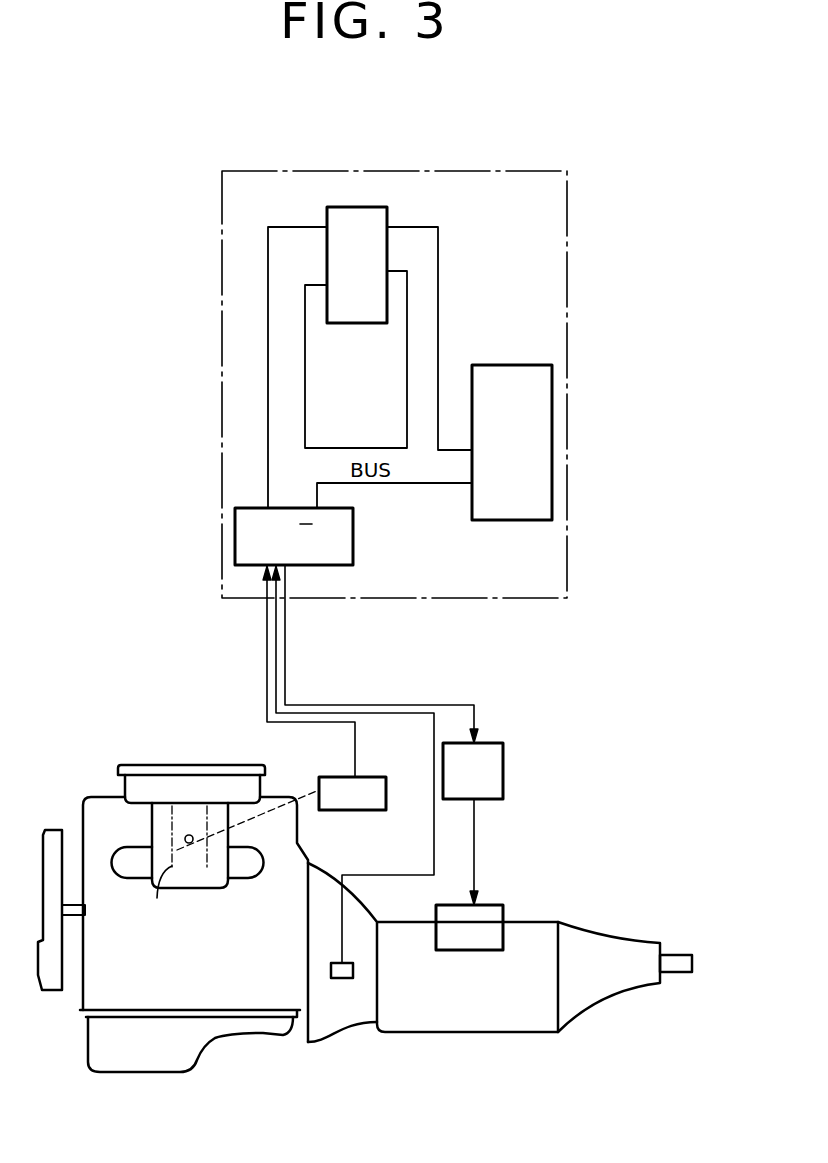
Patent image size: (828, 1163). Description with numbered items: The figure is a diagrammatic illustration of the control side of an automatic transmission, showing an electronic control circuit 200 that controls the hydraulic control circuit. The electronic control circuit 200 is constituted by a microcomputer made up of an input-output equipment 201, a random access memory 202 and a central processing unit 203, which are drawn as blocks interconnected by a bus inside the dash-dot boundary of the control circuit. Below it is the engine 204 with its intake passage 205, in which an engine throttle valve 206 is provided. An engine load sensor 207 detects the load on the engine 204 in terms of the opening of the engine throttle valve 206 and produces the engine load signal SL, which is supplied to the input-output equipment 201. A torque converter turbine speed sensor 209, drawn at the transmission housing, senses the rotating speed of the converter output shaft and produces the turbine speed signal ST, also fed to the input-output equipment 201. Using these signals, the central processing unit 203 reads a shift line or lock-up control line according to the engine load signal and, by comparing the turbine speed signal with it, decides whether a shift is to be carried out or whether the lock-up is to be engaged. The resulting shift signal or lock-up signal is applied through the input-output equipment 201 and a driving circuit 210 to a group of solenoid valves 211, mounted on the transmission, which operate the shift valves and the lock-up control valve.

The electronic control circuit 200 is at (414, 171).
The input-output equipment 201 is at (353, 531).
The random access memory 202 is at (388, 220).
The central processing unit 203 is at (508, 365).
The engine 204 is at (82, 800).
The intake passage 205 is at (158, 894).
The engine throttle valve 206 is at (185, 838).
The engine load sensor 207 is at (342, 782).
The torque converter turbine speed sensor 209 is at (342, 978).
The driving circuit 210 is at (503, 776).
The group of solenoid valves 211 is at (504, 910).